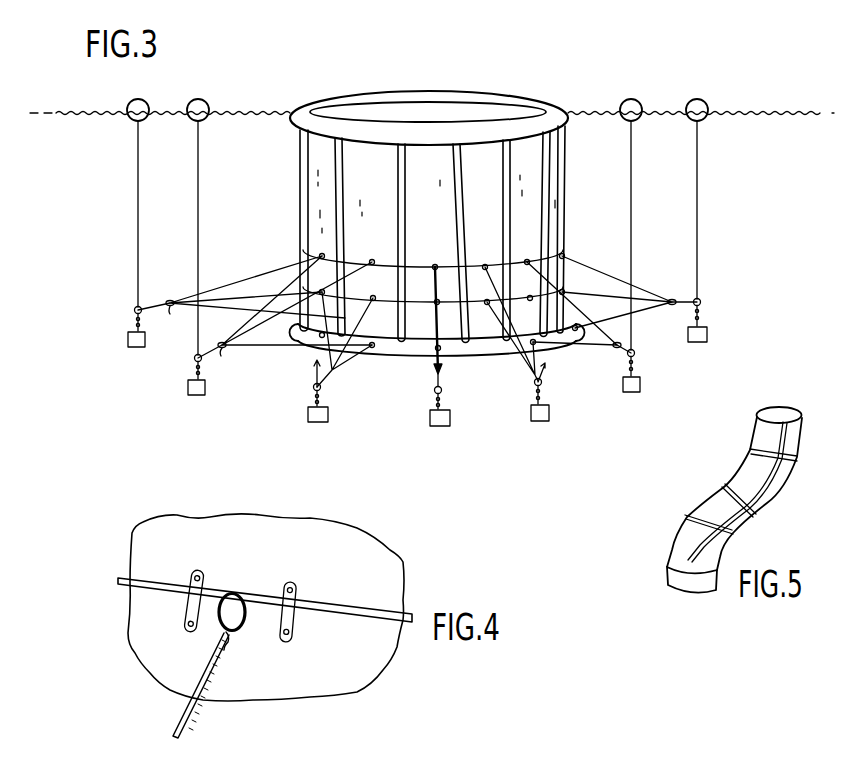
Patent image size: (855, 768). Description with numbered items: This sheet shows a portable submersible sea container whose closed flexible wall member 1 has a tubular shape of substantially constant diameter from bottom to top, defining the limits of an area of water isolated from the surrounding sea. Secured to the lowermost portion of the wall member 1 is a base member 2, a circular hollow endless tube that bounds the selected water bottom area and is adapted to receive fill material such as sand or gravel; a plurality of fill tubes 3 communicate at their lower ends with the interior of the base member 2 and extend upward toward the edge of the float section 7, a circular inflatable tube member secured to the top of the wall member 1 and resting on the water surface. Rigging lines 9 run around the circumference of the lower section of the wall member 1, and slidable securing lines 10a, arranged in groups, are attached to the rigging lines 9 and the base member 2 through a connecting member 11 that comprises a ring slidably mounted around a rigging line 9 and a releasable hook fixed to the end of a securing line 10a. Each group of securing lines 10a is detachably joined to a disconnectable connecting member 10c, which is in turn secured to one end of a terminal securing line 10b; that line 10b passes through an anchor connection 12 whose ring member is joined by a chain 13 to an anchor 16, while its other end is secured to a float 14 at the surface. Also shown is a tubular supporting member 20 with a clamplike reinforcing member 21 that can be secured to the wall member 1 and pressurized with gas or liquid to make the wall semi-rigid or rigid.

In FIG. 3, the flexible wall member 1 is at (315, 206).
In FIG. 4, the flexible wall member 1 is at (383, 560).
In FIG. 3, the base member 2 is at (405, 352).
In FIG. 3, the fill tubes 3 is at (300, 158).
In FIG. 3, the float section 7 is at (552, 107).
In FIG. 3, the rigging lines 9 is at (357, 255).
In FIG. 4, the rigging lines 9 is at (335, 612).
In FIG. 3, the securing lines 10a is at (260, 273).
In FIG. 4, the securing lines 10a is at (205, 680).
In FIG. 3, the terminal securing line 10b is at (138, 200).
In FIG. 3, the disconnectable connecting member 10c is at (170, 308).
In FIG. 3, the connecting member 11 is at (373, 259).
In FIG. 4, the connecting member 11 is at (246, 592).
In FIG. 3, the anchor connection 12 is at (134, 311).
In FIG. 3, the chain 13 is at (314, 393).
In FIG. 3, the float 14 is at (144, 101).
In FIG. 3, the anchor 16 is at (128, 342).
In FIG. 5, the tubular supporting member 20 is at (780, 477).
In FIG. 5, the clamplike reinforcing member 21 is at (690, 517).